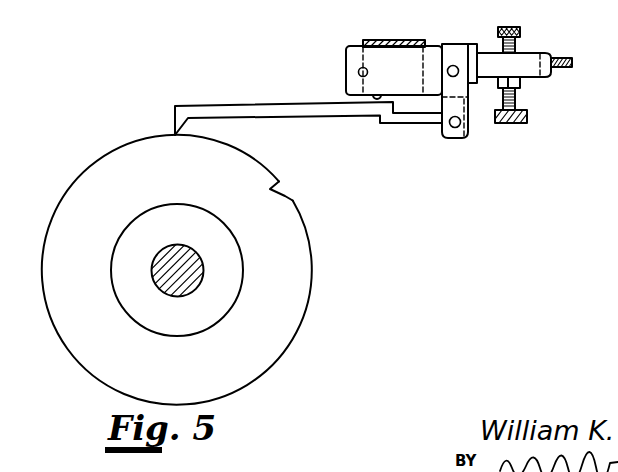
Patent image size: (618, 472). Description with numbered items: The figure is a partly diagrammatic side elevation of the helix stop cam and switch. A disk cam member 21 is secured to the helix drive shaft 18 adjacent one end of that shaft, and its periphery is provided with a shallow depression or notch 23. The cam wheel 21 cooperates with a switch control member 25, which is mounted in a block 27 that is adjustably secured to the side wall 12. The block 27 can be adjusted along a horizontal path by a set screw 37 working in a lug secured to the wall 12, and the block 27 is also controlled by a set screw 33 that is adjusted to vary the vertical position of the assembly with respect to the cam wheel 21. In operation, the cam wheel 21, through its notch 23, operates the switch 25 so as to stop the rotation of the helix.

The side wall 12 is at (352, 0).
The helix drive shaft 18 is at (173, 289).
The disk cam member 21 is at (298, 246).
The notch 23 is at (286, 196).
The switch control member 25 is at (289, 91).
The block 27 is at (408, 59).
The set screw 33 is at (514, 29).
The set screw 37 is at (566, 56).